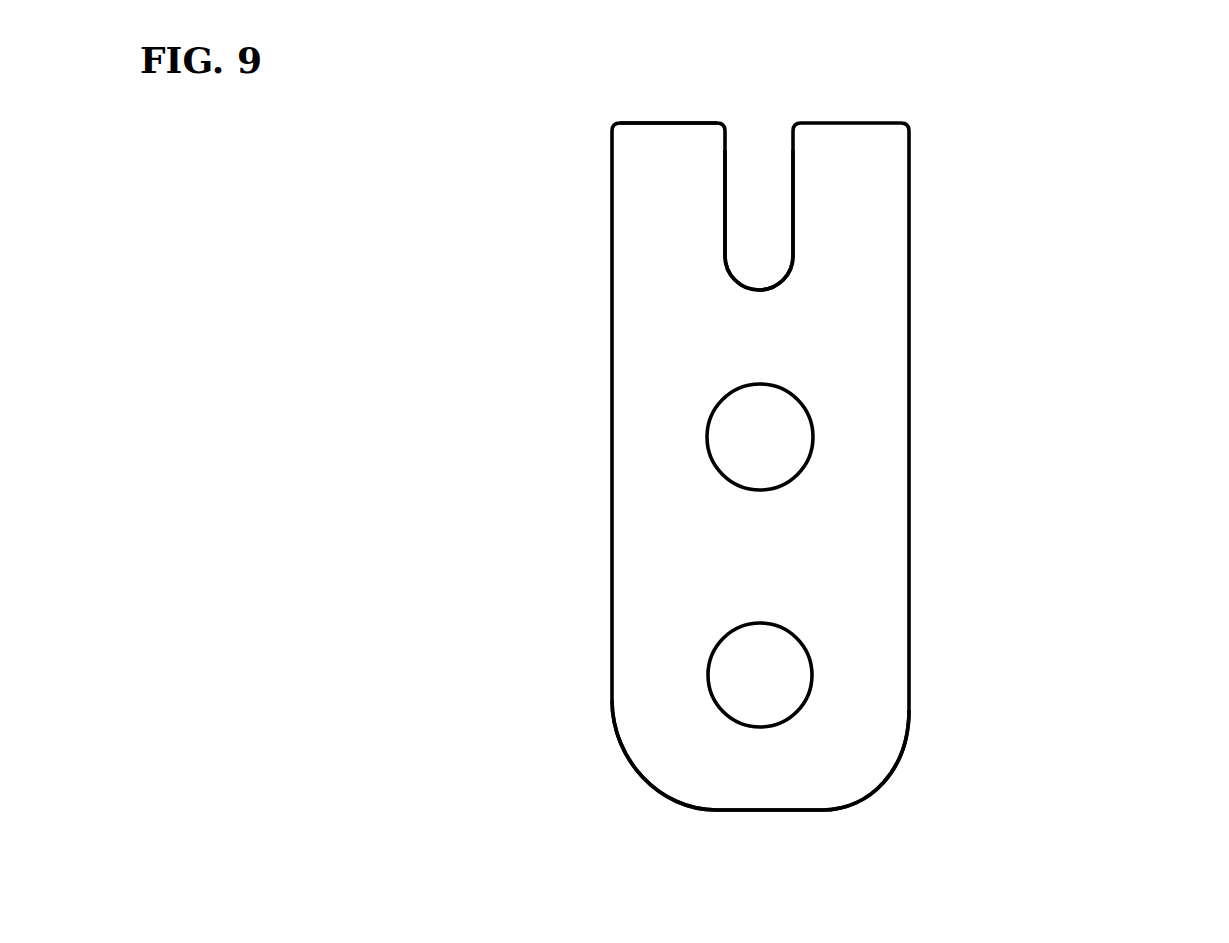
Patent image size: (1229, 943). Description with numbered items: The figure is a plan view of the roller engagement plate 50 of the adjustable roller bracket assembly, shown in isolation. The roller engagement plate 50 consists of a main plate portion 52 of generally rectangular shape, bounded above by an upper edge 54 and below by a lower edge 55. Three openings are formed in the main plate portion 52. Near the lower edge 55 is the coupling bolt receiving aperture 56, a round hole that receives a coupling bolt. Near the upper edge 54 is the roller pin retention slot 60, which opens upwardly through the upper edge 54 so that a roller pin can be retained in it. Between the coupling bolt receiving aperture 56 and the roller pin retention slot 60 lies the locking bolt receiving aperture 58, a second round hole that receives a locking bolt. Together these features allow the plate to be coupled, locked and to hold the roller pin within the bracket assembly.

The roller engagement plate 50 is at (1050, 273).
The main plate portion 52 is at (883, 537).
The upper edge 54 is at (642, 125).
The lower edge 55 is at (832, 803).
The coupling bolt receiving aperture 56 is at (743, 693).
The locking bolt receiving aperture 58 is at (728, 432).
The roller pin retention slot 60 is at (747, 170).